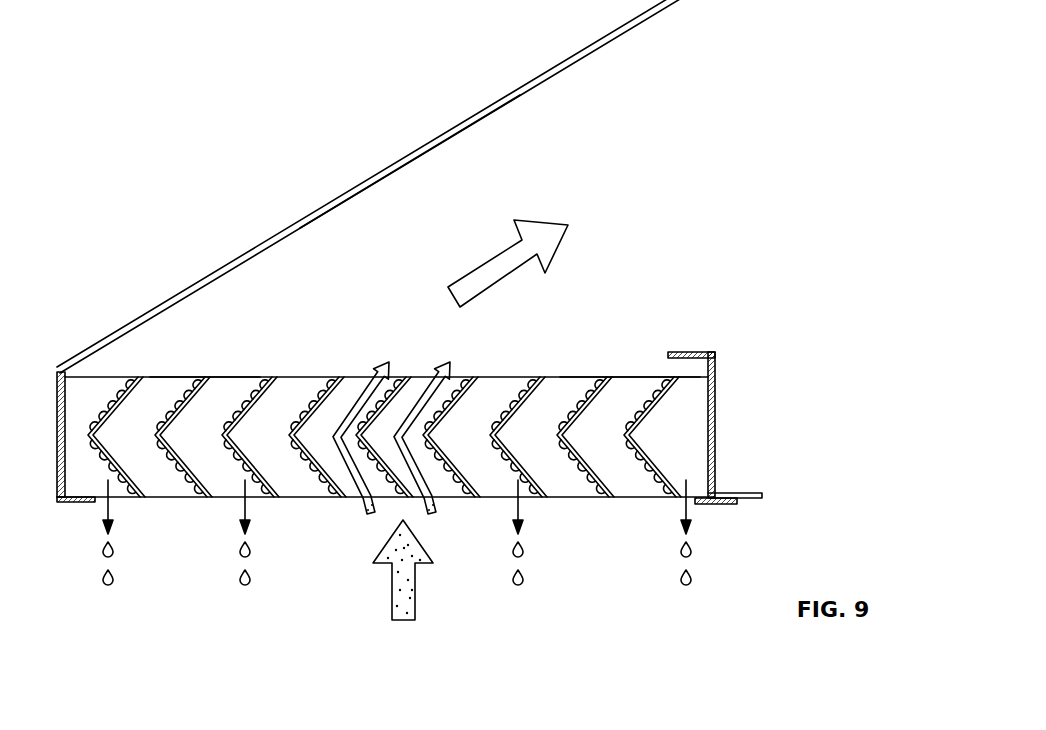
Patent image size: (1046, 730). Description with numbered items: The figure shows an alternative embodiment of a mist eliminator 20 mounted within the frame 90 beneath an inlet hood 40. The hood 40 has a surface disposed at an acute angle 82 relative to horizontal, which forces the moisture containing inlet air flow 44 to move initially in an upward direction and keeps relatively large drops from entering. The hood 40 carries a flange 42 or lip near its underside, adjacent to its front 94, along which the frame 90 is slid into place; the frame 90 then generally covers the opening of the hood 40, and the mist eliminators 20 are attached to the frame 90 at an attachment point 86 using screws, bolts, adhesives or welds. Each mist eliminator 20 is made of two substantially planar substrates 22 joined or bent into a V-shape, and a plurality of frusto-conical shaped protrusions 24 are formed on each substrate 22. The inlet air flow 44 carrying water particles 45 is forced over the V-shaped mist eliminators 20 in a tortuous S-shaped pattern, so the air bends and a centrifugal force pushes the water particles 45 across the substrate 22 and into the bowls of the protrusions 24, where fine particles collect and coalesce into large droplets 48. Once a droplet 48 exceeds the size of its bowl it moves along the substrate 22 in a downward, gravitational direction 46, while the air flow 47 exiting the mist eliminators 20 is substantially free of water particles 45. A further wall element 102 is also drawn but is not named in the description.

The mist eliminator 20 is at (606, 376).
The substantially planar substrate 22 is at (118, 410).
The frusto-conical shaped protrusion 24 is at (260, 377).
The inlet hood 40 is at (317, 211).
The flange 42 is at (68, 502).
The inlet air flow 44 is at (415, 590).
The water particles 45 is at (403, 553).
The downward direction 46 is at (100, 510).
The air flow exiting the mist eliminators 47 is at (385, 362).
The large droplet 48 is at (104, 578).
The acute angle 82 is at (530, 95).
The attachment point 86 is at (207, 377).
The frame 90 is at (628, 377).
The front of the hood 94 is at (57, 437).
The right side wall 102 is at (713, 477).